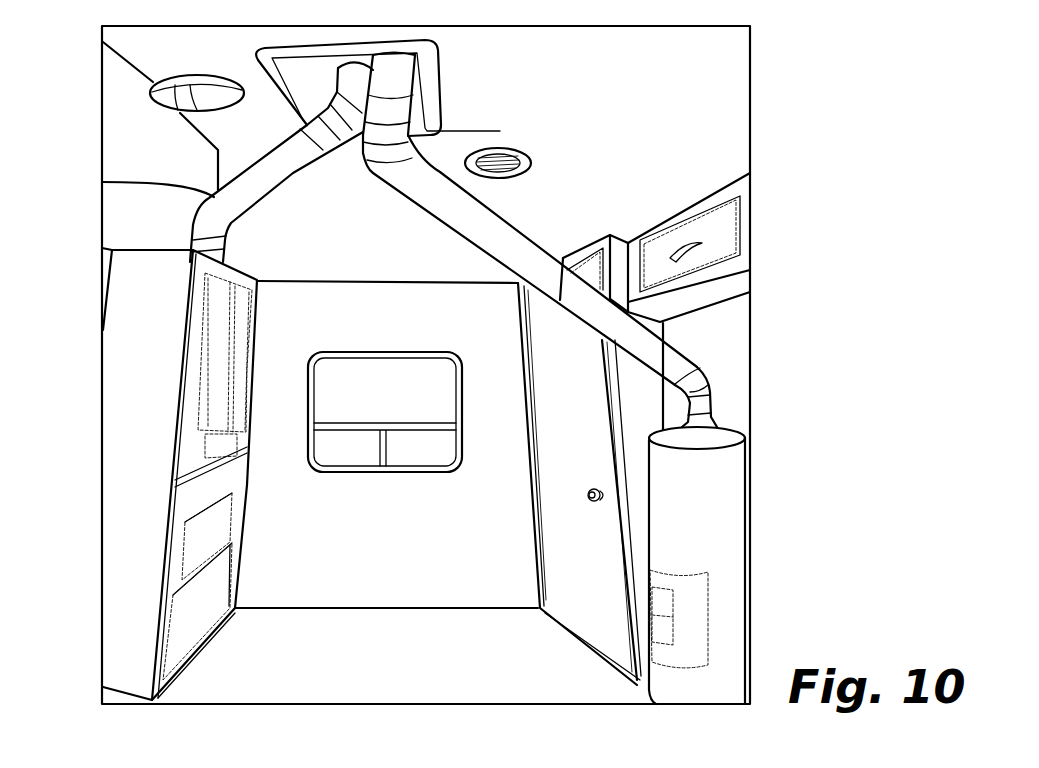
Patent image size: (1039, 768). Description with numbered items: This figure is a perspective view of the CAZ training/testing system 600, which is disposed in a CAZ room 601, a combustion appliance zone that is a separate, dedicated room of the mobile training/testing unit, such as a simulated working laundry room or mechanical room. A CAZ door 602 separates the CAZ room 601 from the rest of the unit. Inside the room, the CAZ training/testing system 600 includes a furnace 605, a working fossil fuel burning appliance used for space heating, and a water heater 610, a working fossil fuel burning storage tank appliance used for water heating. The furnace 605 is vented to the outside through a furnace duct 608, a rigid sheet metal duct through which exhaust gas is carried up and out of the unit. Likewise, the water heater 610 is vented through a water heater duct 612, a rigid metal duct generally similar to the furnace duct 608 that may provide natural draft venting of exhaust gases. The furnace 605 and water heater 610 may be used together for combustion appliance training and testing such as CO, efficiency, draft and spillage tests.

The CAZ training/testing system 600 is at (622, 198).
The CAZ room 601 is at (411, 556).
The CAZ door 602 is at (605, 620).
The furnace 605 is at (143, 479).
The furnace duct 608 is at (227, 214).
The water heater 610 is at (697, 533).
The water heater duct 612 is at (495, 240).